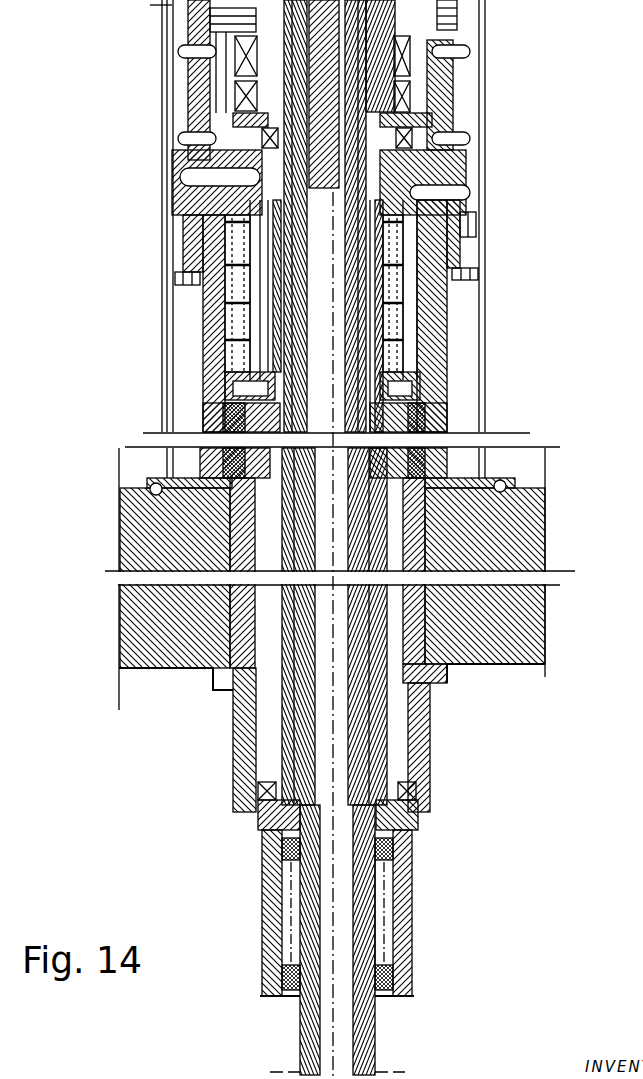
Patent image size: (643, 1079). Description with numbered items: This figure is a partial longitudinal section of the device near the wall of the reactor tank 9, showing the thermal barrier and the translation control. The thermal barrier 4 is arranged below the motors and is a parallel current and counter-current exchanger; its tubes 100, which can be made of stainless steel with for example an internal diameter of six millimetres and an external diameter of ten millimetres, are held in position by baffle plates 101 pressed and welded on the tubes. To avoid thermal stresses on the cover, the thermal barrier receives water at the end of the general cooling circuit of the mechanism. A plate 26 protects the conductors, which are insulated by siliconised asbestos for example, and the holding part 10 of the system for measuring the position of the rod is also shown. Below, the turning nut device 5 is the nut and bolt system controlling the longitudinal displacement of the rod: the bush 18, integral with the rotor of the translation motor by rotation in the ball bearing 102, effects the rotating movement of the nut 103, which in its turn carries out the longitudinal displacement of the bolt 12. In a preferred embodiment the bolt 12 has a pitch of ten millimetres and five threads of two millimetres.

The thermal barrier 4 is at (243, 289).
The turning nut device 5 is at (377, 921).
The tank 9 is at (547, 521).
The holding part 10 is at (432, 447).
The bolt 12 is at (385, 883).
The bush 18 is at (383, 728).
The plate 26 is at (486, 362).
The tubes 100 is at (410, 323).
The baffle plates 101 is at (392, 262).
The ball bearing 102 is at (408, 790).
The nut 103 is at (399, 953).